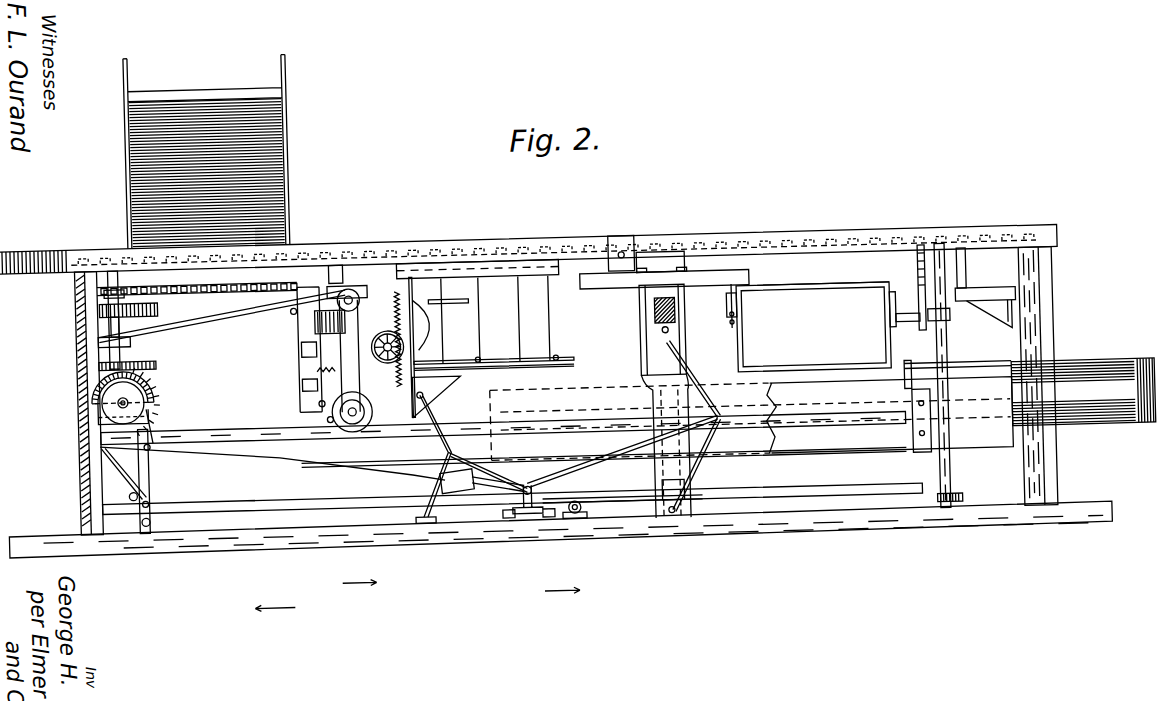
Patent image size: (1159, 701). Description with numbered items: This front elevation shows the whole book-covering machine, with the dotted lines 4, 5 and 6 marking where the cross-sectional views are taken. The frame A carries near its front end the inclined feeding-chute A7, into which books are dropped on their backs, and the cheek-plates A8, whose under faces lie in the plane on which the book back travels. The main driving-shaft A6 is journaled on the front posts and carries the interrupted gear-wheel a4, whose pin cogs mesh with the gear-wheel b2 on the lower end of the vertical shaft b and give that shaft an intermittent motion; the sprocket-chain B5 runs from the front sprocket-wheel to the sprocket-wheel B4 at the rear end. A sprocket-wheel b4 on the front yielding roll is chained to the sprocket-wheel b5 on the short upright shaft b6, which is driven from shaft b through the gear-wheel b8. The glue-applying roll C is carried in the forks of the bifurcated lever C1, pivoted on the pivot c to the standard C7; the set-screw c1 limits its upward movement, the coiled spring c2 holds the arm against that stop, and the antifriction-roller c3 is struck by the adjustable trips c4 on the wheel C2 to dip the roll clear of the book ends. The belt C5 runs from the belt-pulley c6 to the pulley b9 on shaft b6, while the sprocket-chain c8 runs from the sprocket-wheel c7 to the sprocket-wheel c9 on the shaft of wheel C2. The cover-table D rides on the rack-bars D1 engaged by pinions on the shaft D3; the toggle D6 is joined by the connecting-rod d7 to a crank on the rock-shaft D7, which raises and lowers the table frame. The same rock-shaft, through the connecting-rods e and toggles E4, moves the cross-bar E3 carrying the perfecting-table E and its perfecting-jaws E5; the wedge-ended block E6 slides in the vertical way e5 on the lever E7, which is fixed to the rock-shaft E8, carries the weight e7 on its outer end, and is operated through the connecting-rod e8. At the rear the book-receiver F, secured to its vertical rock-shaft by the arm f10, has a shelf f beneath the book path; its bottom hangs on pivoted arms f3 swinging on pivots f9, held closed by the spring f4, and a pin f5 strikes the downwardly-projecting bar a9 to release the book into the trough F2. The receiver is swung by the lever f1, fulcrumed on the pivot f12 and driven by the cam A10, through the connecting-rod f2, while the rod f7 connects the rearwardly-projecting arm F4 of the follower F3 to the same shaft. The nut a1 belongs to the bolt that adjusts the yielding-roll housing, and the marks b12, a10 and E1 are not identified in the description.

The dotted line 4 4 is at (227, 630).
The dotted line 5 5 is at (382, 595).
The dotted line 6 6 is at (587, 620).
The frame A is at (92, 239).
The inclined feeding-chute A7 is at (283, 123).
The cheek-plates A8 is at (503, 266).
The cam A10 is at (97, 392).
The main driving-shaft A6 is at (117, 395).
The gear-wheel a4 is at (150, 392).
The vertical shaft b is at (101, 350).
The short upright shaft b6 is at (111, 265).
The gear-wheel b8 is at (102, 298).
The sprocket-wheel b5 is at (113, 288).
The pulley b9 is at (127, 328).
The gear-wheel b2 is at (137, 355).
The sprocket-wheel b4 is at (330, 272).
The bracket b12 is at (971, 282).
The glue-applying roll C is at (360, 284).
The bifurcated lever C1 is at (303, 355).
The wheel C2 is at (351, 418).
The belt C5 is at (250, 316).
The standard C7 is at (300, 380).
The pivot c is at (293, 304).
The set-screw c1 is at (328, 355).
The coiled spring c2 is at (325, 395).
The antifriction-roller c3 is at (327, 413).
The trips c4 is at (308, 284).
The belt-pulley c6 is at (365, 284).
The sprocket-wheel c7 is at (391, 339).
The sprocket-chain c8 is at (361, 368).
The sprocket-wheel c9 is at (367, 400).
The nut a1 is at (406, 343).
The pins a10 is at (479, 347).
The cover-table D is at (494, 305).
The rack-bars D1 is at (413, 301).
The shaft D3 is at (441, 358).
The toggle D6 is at (435, 403).
The rock-shaft D7 is at (526, 484).
The connecting-rod d7 is at (488, 468).
The weight e7 is at (482, 475).
The connecting-rods e is at (604, 460).
The vertical way e5 is at (658, 488).
The connecting-rod e8 is at (242, 493).
The back-perfecting table E is at (706, 333).
The cross-bar E3 is at (662, 305).
The toggles E4 is at (702, 400).
The perfecting-jaws E5 is at (748, 284).
The block E6 is at (688, 490).
The lever E7 is at (625, 506).
The rock-shaft E8 is at (570, 515).
The vertical column E1 is at (946, 340).
The book-receiver F is at (813, 327).
The trough-like receptacle F2 is at (848, 413).
The follower F3 is at (907, 386).
The arm F4 is at (1090, 434).
The shelf f is at (818, 297).
The lever f1 is at (147, 466).
The connecting-rod f2 is at (795, 503).
The pivoted arms f3 is at (898, 351).
The spring f4 is at (736, 314).
The pin f5 is at (725, 337).
The rod f7 is at (1084, 376).
The pivots f9 is at (743, 304).
The arm f10 is at (903, 325).
The pivot f12 is at (156, 436).
The downwardly-projecting bar a9 is at (921, 277).
The sprocket-chain B5 is at (812, 246).
The sprocket-wheel B4 is at (966, 250).